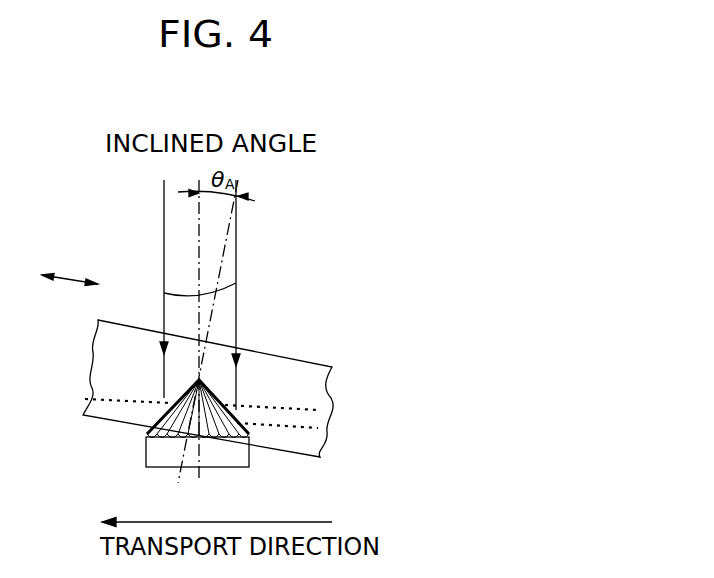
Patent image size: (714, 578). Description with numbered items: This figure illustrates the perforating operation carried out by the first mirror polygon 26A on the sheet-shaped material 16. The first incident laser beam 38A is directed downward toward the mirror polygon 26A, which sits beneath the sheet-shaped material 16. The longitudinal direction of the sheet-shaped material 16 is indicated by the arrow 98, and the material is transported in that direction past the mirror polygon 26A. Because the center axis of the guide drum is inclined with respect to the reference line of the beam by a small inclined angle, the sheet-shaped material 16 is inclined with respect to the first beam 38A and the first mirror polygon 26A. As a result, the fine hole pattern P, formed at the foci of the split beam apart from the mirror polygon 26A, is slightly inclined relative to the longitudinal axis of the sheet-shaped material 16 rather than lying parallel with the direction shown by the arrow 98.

The first beam 38A is at (237, 276).
The sheet-shaped material 16 is at (275, 355).
The fine hole pattern P is at (302, 412).
The first mirror polygon 26A is at (228, 453).
The arrow indicating longitudinal direction 98 is at (67, 277).